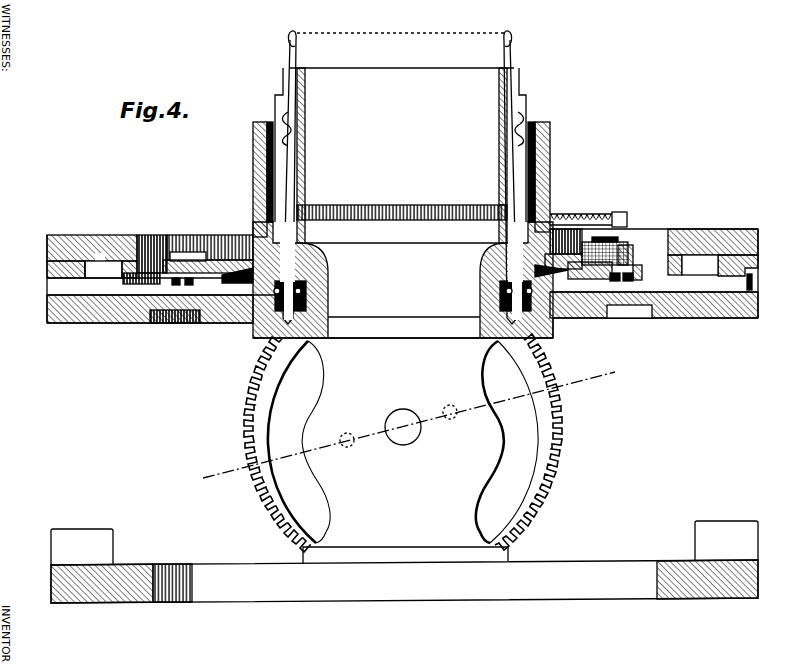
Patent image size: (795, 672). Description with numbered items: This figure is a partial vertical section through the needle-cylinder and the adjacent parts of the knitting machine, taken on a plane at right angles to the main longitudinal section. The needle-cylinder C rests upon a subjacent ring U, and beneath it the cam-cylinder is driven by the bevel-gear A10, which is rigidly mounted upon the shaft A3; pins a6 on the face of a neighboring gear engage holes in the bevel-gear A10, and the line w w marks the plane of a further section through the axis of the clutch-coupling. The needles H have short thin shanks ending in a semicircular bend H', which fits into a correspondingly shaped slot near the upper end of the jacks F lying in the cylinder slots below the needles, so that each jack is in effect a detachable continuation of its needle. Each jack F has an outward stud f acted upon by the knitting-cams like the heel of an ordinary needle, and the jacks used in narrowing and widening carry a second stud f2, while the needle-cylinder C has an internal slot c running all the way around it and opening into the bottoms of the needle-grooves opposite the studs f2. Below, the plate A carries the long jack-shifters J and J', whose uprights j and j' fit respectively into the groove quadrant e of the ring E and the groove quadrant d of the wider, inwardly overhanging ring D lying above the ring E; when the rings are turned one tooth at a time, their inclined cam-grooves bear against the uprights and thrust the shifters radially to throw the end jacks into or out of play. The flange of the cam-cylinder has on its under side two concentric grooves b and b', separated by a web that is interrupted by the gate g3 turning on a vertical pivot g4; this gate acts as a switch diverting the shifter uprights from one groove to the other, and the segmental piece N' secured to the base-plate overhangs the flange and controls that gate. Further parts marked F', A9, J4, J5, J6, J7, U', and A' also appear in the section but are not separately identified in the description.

The needle-cylinder C is at (402, 175).
The slot c is at (403, 206).
The second stud f2 is at (505, 204).
The stud f is at (259, 214).
The left rod F' is at (303, 182).
The jack F is at (497, 182).
The needle H is at (399, 69).
The semicircular bend H' is at (417, 121).
The ring D is at (47, 250).
The ring E is at (47, 272).
The upright j' is at (103, 238).
The groove quadrant d is at (84, 238).
The block A9 is at (116, 271).
The base-plate A is at (398, 276).
The groove b' is at (394, 294).
The groove b is at (392, 284).
The jack-shifter J' is at (163, 313).
The channel J4 is at (248, 312).
The left cheek J5 is at (302, 270).
The right cheek J7 is at (496, 272).
The ring U is at (404, 347).
The base J6 is at (560, 310).
The opening U' is at (563, 351).
The segmental piece N' is at (600, 212).
The vertical pivot g4 is at (637, 252).
The upright j is at (719, 263).
The groove quadrant e is at (753, 277).
The jack-shifter J is at (654, 314).
The gate g3 is at (610, 310).
The bevel-gear A10 is at (264, 398).
The shaft A3 is at (404, 438).
The pin a6 is at (350, 442).
The section line w is at (405, 424).
The base plate A' is at (399, 562).